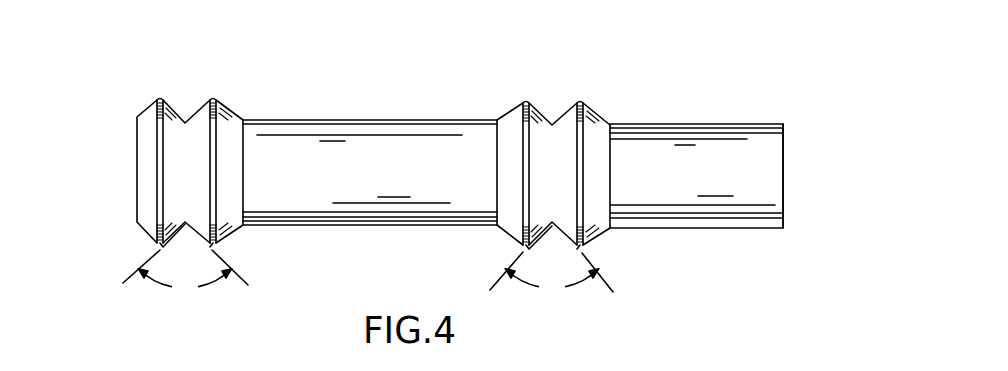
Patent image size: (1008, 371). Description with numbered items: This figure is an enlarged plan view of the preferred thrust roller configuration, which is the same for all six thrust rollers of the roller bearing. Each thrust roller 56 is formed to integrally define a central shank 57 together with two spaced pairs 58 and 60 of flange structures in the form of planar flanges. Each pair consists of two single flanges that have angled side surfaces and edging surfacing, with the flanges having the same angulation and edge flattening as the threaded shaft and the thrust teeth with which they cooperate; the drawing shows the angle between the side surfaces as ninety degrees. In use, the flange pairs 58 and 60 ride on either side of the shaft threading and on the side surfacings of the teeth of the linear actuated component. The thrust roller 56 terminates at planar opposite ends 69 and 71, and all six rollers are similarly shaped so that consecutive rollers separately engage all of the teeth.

The thrust roller 56 is at (736, 149).
The shank 57 is at (412, 136).
The first pair of flange structures 58 is at (183, 157).
The second pair of flange structures 60 is at (591, 158).
The planar end 69 is at (138, 203).
The planar end 71 is at (783, 183).